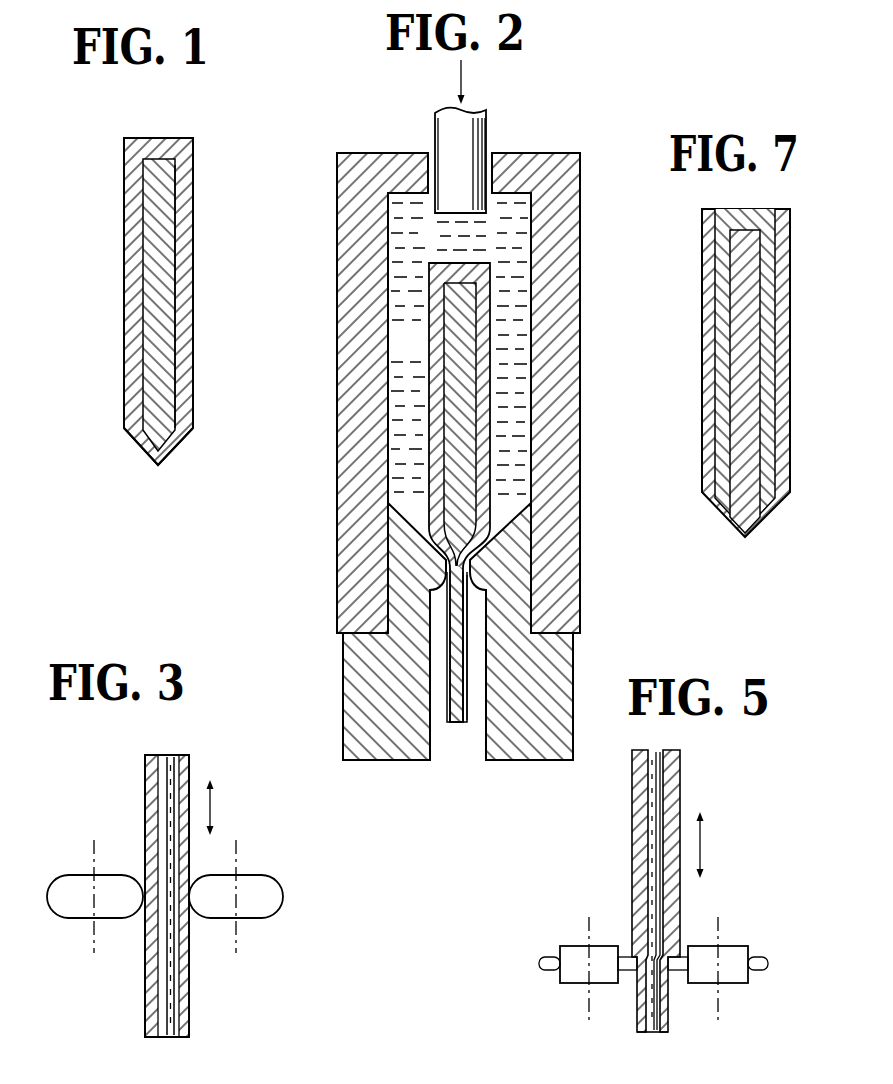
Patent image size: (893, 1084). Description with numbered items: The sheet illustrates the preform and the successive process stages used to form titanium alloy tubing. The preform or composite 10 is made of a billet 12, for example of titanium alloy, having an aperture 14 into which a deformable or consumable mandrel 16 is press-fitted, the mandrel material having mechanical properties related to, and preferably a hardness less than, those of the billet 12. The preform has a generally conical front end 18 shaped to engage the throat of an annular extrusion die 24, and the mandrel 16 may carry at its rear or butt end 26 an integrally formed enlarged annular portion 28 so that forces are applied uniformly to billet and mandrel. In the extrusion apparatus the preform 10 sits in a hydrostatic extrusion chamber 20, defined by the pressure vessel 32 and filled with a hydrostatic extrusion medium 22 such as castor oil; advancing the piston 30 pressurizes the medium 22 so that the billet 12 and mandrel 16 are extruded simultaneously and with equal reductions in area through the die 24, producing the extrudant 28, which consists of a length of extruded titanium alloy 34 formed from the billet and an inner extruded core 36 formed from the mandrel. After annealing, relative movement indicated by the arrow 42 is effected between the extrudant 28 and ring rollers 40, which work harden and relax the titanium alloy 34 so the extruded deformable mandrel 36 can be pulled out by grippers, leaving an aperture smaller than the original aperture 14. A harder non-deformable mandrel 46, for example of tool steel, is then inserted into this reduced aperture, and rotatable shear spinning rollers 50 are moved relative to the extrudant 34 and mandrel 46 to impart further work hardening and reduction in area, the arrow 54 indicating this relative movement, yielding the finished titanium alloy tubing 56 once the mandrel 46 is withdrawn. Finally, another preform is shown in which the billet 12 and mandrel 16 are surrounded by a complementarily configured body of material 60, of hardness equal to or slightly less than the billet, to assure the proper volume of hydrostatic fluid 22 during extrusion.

In FIG. 1, the preform or composite 10 is at (140, 289).
In FIG. 2, the preform or composite 10 is at (527, 492).
In FIG. 1, the billet 12 is at (183, 260).
In FIG. 2, the billet 12 is at (483, 317).
In FIG. 7, the billet 12 is at (771, 288).
In FIG. 1, the aperture 14 is at (169, 309).
In FIG. 1, the mandrel 16 is at (160, 394).
In FIG. 2, the mandrel 16 is at (465, 400).
In FIG. 7, the mandrel 16 is at (745, 343).
In FIG. 1, the front end 18 is at (131, 458).
In FIG. 2, the hydrostatic extrusion chamber 20 is at (518, 333).
In FIG. 2, the hydrostatic extrusion medium 22 is at (421, 350).
In FIG. 2, the annular extrusion die 24 is at (472, 568).
In FIG. 1, the rear or butt end 26 is at (167, 129).
In FIG. 2, the extrudant 28 is at (455, 698).
In FIG. 3, the extrudant 28 is at (146, 879).
In FIG. 5, the extrudant 28 is at (644, 891).
In FIG. 2, the piston 30 is at (486, 128).
In FIG. 2, the pressure vessel 32 is at (567, 197).
In FIG. 2, the extruded titanium alloy 34 is at (470, 716).
In FIG. 3, the extruded titanium alloy 34 is at (183, 769).
In FIG. 5, the extruded titanium alloy 34 is at (676, 785).
In FIG. 2, the inner extruded core 36 is at (457, 726).
In FIG. 3, the inner extruded core 36 is at (168, 762).
In FIG. 3, the ring rollers 40 is at (53, 866).
In FIG. 3, the arrow 42 is at (212, 805).
In FIG. 5, the non-deformable mandrel 46 is at (652, 763).
In FIG. 5, the shear spinning rollers 50 is at (566, 934).
In FIG. 5, the direction of movement 54 is at (702, 845).
In FIG. 5, the titanium alloy tubing 56 is at (665, 1013).
In FIG. 7, the body of material 60 is at (704, 441).